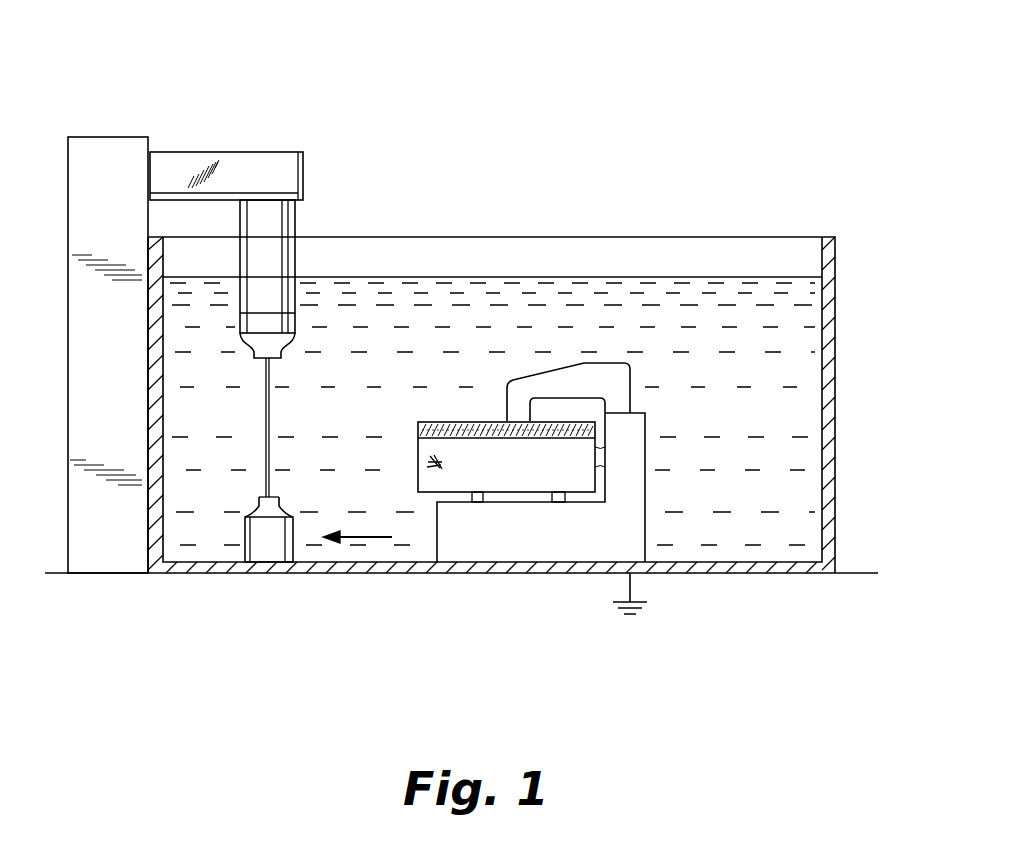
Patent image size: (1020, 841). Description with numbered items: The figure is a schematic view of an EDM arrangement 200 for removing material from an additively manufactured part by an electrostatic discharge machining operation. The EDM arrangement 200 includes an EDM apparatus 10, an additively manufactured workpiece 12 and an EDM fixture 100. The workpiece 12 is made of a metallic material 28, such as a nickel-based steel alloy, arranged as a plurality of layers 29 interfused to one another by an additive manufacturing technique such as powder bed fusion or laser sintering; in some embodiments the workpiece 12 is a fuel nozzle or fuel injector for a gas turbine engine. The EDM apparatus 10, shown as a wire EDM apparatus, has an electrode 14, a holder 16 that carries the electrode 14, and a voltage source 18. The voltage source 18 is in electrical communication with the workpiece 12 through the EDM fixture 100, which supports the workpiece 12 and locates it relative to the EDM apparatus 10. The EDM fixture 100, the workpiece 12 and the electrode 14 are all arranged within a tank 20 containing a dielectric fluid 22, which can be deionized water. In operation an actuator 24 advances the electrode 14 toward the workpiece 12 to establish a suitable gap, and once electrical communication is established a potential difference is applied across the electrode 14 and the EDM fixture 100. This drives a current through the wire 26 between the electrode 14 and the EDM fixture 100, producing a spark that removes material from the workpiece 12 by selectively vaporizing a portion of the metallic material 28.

The EDM apparatus 10 is at (214, 135).
The additively manufactured workpiece 12 is at (417, 426).
The electrode 14 is at (273, 232).
The holder 16 is at (296, 325).
The voltage source 18 is at (268, 172).
The tank 20 is at (840, 377).
The dielectric fluid 22 is at (718, 528).
The actuator 24 is at (248, 538).
The wire 26 is at (265, 432).
The metallic material 28 is at (426, 462).
The layers 29 is at (452, 422).
The EDM fixture 100 is at (655, 509).
The EDM arrangement 200 is at (665, 110).